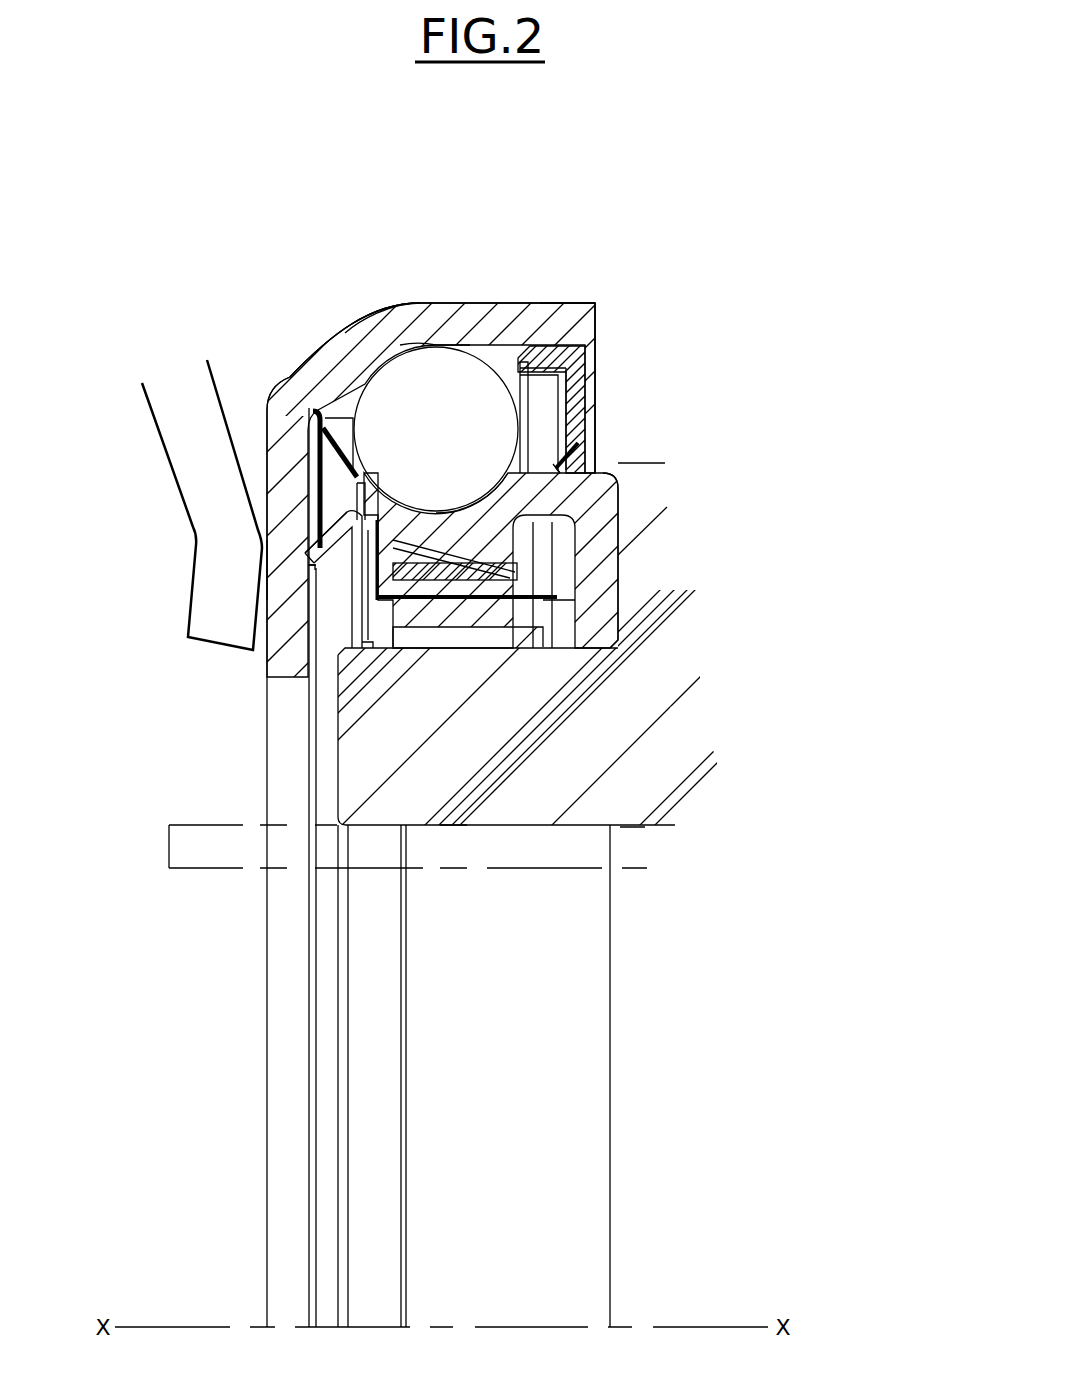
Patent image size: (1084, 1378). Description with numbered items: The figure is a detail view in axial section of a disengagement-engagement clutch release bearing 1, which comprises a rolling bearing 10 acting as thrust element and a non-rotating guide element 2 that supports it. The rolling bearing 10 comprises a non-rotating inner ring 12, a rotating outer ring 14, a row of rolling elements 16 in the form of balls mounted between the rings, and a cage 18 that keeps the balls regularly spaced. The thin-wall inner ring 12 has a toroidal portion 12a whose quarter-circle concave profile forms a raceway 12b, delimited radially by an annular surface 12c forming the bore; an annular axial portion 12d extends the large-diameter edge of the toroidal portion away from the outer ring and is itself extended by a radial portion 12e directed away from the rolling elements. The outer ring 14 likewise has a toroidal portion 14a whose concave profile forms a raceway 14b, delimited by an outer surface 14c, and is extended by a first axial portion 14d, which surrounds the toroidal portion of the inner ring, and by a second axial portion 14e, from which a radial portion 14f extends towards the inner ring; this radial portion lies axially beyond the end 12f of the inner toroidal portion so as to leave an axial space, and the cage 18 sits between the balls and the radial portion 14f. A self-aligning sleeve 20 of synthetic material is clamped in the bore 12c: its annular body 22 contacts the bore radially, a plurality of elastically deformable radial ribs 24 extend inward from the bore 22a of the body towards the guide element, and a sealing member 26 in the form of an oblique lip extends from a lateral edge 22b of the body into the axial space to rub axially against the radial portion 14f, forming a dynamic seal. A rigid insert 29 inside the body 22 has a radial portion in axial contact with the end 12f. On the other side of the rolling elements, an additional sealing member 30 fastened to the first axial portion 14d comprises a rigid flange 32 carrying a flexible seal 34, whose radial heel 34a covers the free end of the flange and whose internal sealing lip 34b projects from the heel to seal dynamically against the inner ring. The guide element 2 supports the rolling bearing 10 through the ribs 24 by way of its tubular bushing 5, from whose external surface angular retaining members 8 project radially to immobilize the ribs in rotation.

The clutch release bearing device 1 is at (620, 251).
The guide element 2 is at (306, 783).
The bushing 5 is at (408, 792).
The angular retaining members 8 is at (345, 712).
The rolling bearing 10 is at (281, 265).
The inner ring 12 is at (620, 512).
The toroidal portion 12a is at (362, 512).
The raceway 12b is at (470, 455).
The bore 12c is at (378, 542).
The axial portion 12d is at (648, 520).
The radial portion 12e is at (605, 600).
The end of the toroidal portion 12f is at (360, 480).
The outer ring 14 is at (345, 313).
The toroidal portion 14a is at (393, 340).
The raceway 14b is at (407, 373).
The outer surface 14c is at (357, 370).
The first axial portion 14d is at (560, 320).
The second axial portion 14e is at (355, 370).
The radial portion 14f is at (300, 560).
The rolling elements 16 is at (448, 447).
The cage 18 is at (332, 452).
The self-aligning sleeve 20 is at (567, 578).
The body 22 is at (362, 652).
The bore 22a is at (545, 640).
The lateral edge 22b is at (325, 640).
The radial ribs 24 is at (565, 650).
The sealing member 26 is at (330, 588).
The insert 29 is at (340, 660).
The additional sealing member 30 is at (603, 341).
The flange 32 is at (573, 377).
The seal 34 is at (711, 393).
The heel 34a is at (620, 466).
The sealing lip 34b is at (598, 447).